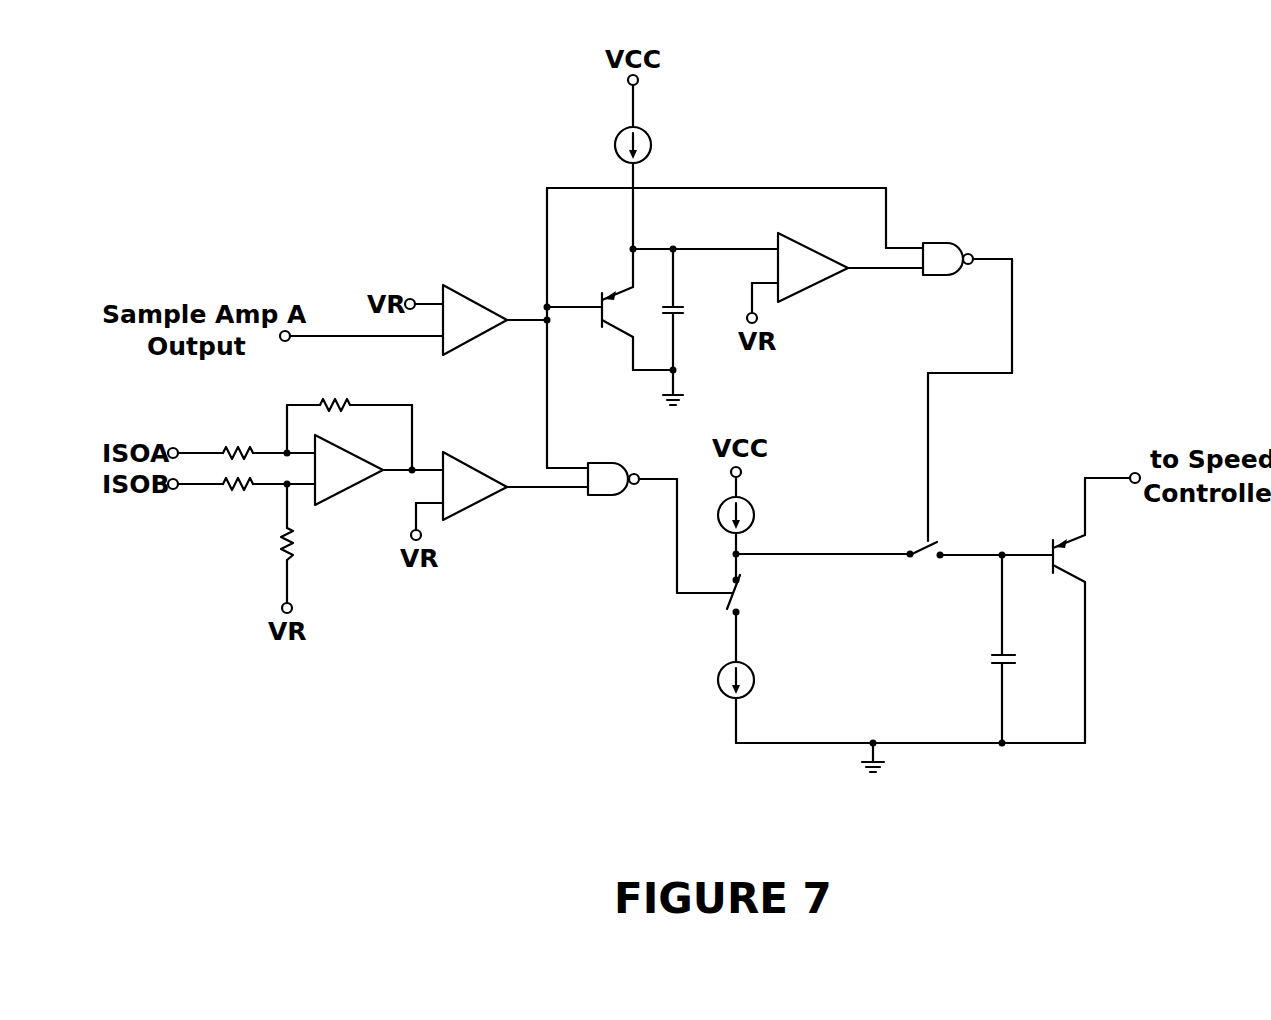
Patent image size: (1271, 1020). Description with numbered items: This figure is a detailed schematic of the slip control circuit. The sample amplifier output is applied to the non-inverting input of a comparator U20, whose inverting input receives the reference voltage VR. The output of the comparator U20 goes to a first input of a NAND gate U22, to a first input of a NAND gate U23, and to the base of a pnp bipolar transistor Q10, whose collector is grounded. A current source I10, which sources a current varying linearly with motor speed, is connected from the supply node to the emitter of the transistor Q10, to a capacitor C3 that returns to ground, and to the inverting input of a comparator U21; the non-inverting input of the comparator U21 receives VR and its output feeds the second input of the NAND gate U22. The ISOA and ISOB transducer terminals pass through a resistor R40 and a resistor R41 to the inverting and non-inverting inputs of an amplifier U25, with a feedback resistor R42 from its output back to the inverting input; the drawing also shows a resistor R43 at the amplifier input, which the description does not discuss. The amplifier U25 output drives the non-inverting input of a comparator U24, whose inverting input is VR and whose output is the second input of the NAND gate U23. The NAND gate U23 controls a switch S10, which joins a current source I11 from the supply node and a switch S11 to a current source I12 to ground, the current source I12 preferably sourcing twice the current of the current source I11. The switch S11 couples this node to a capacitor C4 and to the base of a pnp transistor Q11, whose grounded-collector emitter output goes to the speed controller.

The comparator U20 is at (475, 306).
The comparator U21 is at (813, 255).
The NAND gate U22 is at (951, 242).
The NAND gate U23 is at (619, 460).
The comparator U24 is at (479, 476).
The amplifier U25 is at (359, 467).
The pnp bipolar transistor Q10 is at (617, 309).
The pnp bipolar transistor Q11 is at (1104, 639).
The resistor R40 is at (244, 434).
The resistor R41 is at (244, 503).
The resistor R42 is at (342, 389).
The resistor R43 is at (259, 544).
The capacitor C3 is at (698, 311).
The capacitor C4 is at (981, 661).
The current source I10 is at (660, 145).
The current source I11 is at (763, 515).
The current source I12 is at (763, 680).
The switch S10 is at (764, 593).
The switch S11 is at (931, 570).